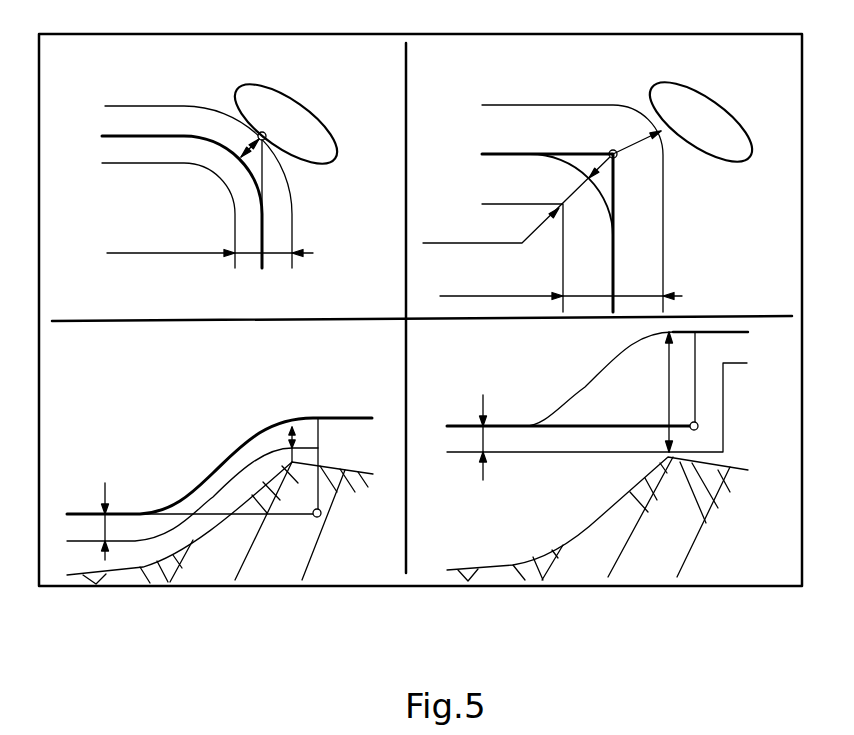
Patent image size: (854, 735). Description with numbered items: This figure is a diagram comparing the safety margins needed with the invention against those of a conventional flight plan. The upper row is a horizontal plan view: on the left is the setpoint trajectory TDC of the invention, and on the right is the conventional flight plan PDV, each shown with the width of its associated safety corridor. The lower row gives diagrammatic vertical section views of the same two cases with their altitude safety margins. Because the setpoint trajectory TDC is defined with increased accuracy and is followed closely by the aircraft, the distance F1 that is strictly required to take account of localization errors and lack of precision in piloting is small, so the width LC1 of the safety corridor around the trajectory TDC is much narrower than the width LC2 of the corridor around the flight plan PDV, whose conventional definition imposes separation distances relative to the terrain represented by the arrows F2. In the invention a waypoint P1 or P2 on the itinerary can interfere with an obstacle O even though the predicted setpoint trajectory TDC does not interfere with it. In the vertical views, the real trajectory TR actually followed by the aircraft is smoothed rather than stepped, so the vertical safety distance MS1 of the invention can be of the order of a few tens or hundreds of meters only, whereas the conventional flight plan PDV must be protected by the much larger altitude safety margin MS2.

The setpoint trajectory TDC is at (130, 133).
The waypoint P1 is at (263, 131).
The obstacle O is at (312, 126).
The distance F1 is at (240, 161).
The width of the safety corridor LC1 is at (210, 242).
The width of the safety corridor LC2 is at (561, 284).
The separation distance arrows F2 is at (630, 162).
The flight plan PDV is at (614, 248).
The real trajectory TR is at (583, 390).
The waypoint P2 is at (316, 517).
The vertical safety distance MS1 is at (105, 507).
The altitude safety margin MS2 is at (484, 424).